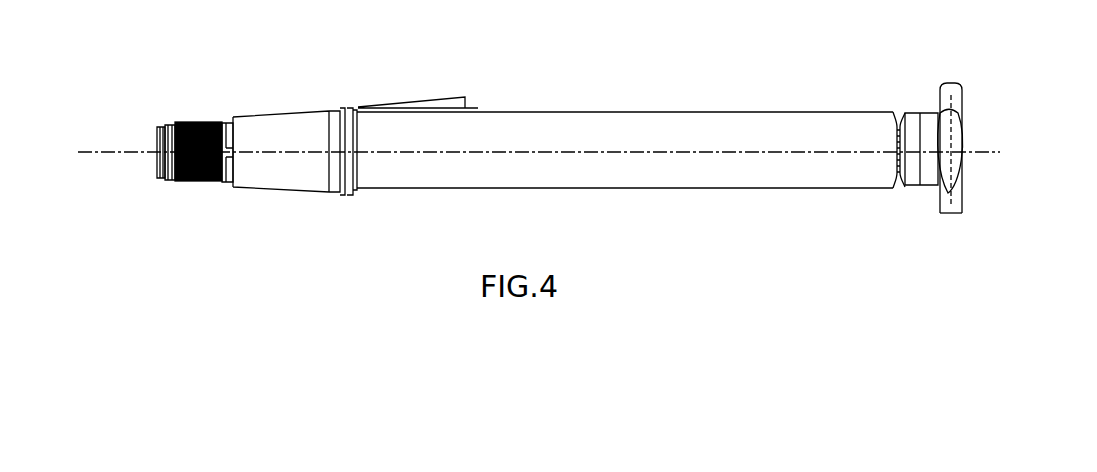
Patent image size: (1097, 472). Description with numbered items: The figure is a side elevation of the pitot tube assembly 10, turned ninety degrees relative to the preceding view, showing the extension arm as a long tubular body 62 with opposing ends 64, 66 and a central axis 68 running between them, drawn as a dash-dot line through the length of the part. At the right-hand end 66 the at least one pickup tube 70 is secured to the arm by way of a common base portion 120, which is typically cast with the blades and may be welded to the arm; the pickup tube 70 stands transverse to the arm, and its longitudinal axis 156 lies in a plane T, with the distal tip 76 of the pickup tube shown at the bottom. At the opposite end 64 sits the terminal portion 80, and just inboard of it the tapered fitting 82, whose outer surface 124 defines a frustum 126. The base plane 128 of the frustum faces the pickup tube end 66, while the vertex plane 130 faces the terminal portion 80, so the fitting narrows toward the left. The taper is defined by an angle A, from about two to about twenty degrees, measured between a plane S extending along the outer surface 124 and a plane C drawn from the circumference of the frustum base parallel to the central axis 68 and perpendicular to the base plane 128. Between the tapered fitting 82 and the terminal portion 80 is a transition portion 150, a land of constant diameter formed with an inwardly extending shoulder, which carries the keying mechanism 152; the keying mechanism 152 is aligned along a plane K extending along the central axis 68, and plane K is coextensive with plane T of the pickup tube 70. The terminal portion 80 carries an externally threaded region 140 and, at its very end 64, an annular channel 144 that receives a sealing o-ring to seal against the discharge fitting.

The pitot tube assembly 10 is at (643, 84).
The tubular body 62 is at (735, 127).
The end of extension arm 64 is at (157, 133).
The end of extension arm 66 is at (903, 188).
The central axis 68 is at (112, 150).
The pickup tube 70 is at (973, 128).
The tip distal end 76 is at (948, 215).
The terminal portion 80 is at (177, 180).
The tapered fitting 82 is at (278, 190).
The base portion 120 is at (910, 113).
The outer surface 124 is at (295, 173).
The frustum 126 is at (290, 110).
The base plane 128 is at (355, 55).
The vertex plane 130 is at (233, 37).
The threads 140 is at (198, 110).
The annular channel 144 is at (163, 178).
The transition portion 150 is at (223, 182).
The keying mechanism 152 is at (236, 142).
The longitudinal axis 156 is at (963, 178).
The plane S is at (438, 97).
The angle A is at (470, 100).
The plane C is at (447, 112).
The plane K is at (625, 152).
The plane T is at (978, 152).